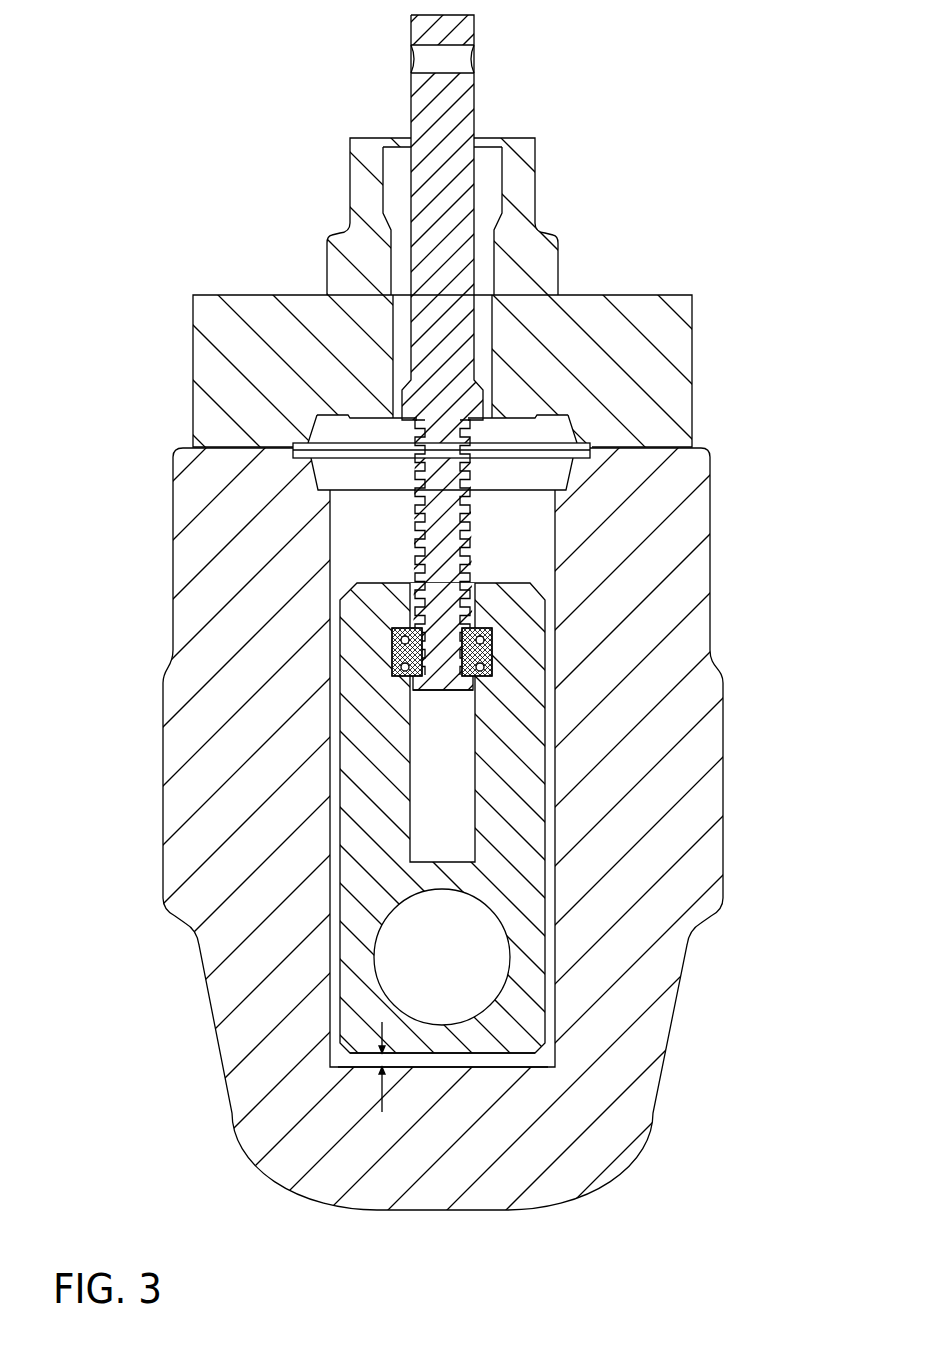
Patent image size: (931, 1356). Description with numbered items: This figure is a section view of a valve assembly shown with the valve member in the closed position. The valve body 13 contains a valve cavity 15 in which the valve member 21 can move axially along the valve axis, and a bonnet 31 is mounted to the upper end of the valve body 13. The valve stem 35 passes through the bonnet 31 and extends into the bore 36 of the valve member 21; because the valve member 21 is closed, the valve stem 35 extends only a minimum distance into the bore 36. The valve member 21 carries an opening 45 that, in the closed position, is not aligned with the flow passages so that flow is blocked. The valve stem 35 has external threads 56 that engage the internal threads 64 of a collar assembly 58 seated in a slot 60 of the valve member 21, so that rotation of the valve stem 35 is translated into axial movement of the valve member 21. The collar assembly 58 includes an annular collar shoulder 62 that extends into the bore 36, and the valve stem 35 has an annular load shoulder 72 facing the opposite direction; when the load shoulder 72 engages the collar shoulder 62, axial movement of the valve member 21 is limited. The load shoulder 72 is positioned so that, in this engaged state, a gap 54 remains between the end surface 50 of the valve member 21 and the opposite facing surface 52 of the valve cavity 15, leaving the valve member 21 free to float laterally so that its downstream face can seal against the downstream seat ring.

The valve body 13 is at (187, 493).
The valve cavity 15 is at (530, 525).
The valve member 21 is at (530, 900).
The bonnet 31 is at (680, 350).
The valve stem 35 is at (470, 176).
The bore 36 is at (470, 748).
The opening 45 is at (490, 965).
The end surface 50 is at (440, 1065).
The opposite facing surface 52 is at (462, 1060).
The gap 54 is at (382, 1105).
The external threads 56 is at (418, 567).
The collar assembly 58 is at (499, 607).
The slot 60 is at (400, 662).
The collar shoulder 62 is at (406, 690).
The internal threads 64 is at (398, 640).
The load shoulder 72 is at (488, 640).